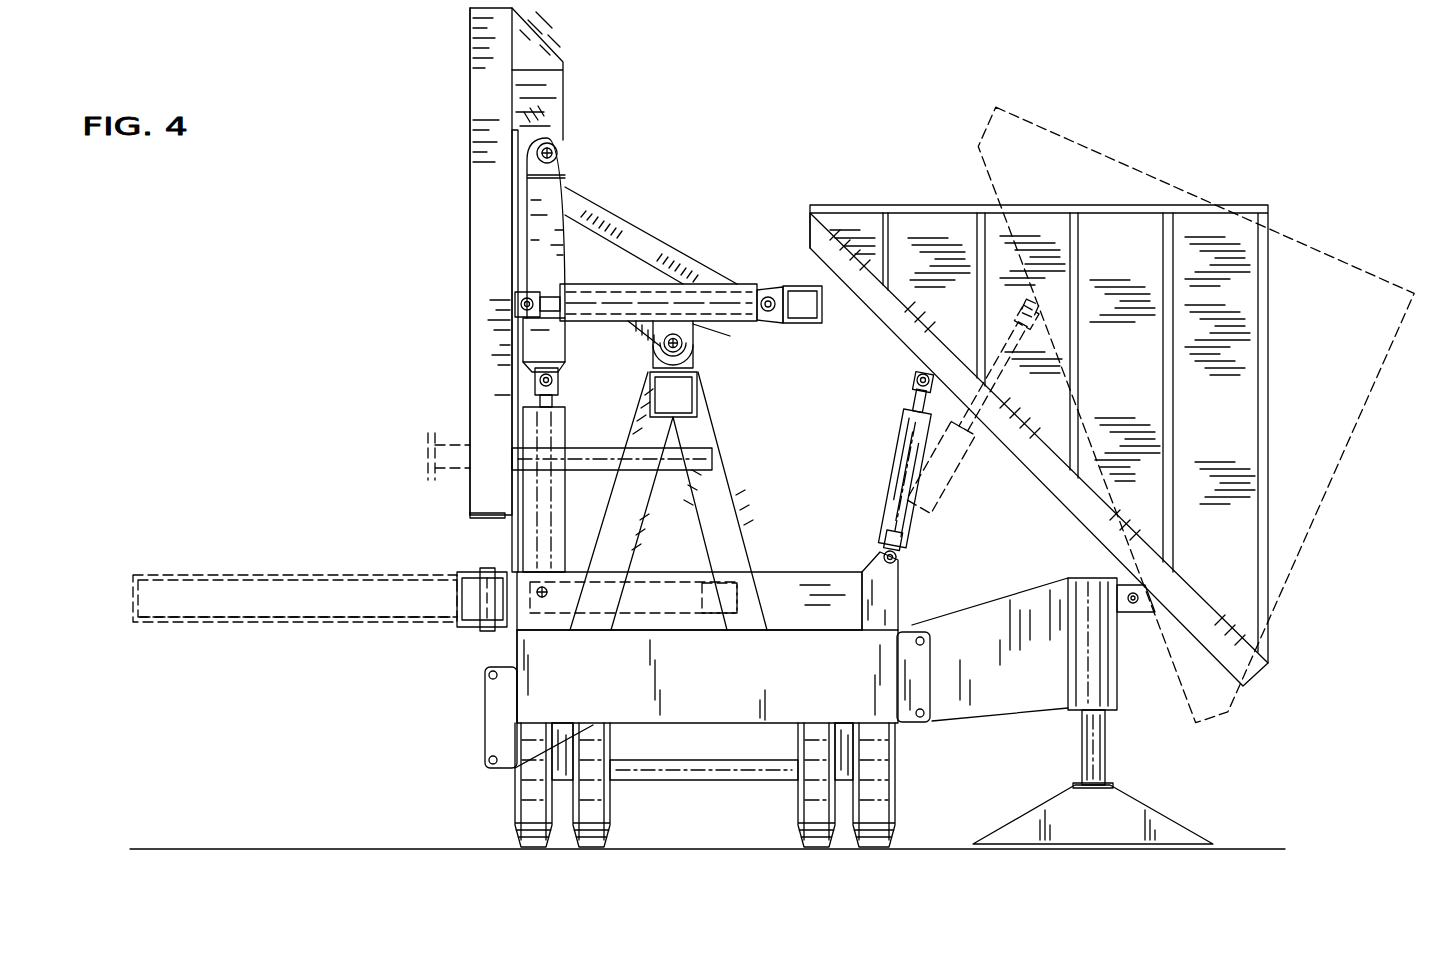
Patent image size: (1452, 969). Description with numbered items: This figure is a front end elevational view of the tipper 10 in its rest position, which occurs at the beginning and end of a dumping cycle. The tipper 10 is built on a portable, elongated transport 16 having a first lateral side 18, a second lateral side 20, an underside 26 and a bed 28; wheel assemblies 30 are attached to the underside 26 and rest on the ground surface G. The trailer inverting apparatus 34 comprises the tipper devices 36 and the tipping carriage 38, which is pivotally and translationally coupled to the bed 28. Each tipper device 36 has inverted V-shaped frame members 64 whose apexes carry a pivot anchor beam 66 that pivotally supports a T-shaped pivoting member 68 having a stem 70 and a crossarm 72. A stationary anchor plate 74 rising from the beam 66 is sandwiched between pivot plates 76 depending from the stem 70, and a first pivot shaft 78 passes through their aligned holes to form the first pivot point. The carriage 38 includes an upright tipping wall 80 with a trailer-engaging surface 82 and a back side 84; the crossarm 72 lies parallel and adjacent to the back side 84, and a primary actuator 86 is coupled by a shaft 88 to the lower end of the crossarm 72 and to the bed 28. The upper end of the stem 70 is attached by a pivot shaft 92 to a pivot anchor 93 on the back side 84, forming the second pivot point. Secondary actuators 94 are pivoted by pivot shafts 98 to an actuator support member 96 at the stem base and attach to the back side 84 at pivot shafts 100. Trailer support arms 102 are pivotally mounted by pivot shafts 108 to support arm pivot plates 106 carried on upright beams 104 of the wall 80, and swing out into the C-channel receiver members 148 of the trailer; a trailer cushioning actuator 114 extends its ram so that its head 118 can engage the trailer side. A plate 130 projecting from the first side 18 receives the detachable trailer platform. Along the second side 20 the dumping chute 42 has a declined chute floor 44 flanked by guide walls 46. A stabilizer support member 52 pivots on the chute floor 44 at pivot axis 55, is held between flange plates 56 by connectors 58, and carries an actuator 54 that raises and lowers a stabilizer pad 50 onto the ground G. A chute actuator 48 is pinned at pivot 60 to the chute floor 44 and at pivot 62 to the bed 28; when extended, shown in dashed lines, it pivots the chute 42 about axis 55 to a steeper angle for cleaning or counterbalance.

The tipper 10 is at (206, 742).
The transport 16 is at (512, 656).
The first lateral side 18 is at (508, 655).
The second lateral side 20 is at (900, 612).
The underside 26 is at (713, 724).
The bed 28 is at (796, 570).
The wheel assemblies 30 is at (716, 783).
The trailer inverting apparatus 34 is at (740, 104).
The tipper devices 36 is at (778, 418).
The tipping carriage 38 is at (462, 251).
The dumping chute 42 is at (1172, 170).
The chute floor 44 is at (1062, 487).
The guide walls 46 is at (1222, 393).
The chute actuators 48 is at (927, 453).
The stabilizer pads 50 is at (1155, 810).
The stabilizer support member 52 is at (993, 720).
The actuator 54 is at (1120, 690).
The pivot axis 55 is at (1133, 605).
The flange plates 56 is at (918, 726).
The connectors 58 is at (937, 643).
The pivot 60 is at (915, 378).
The pivot 62 is at (883, 556).
The inverted V-shaped frame members 64 is at (745, 418).
The pivot anchor beam 66 is at (700, 398).
The T-shaped pivoting member 68 is at (683, 284).
The stem 70 is at (773, 290).
The crossarm 72 is at (626, 278).
The anchor plate 74 is at (698, 363).
The pivot plates 76 is at (696, 341).
The first pivot shaft 78 is at (664, 350).
The tipping wall 80 is at (493, 173).
The trailer-engaging surface 82 is at (471, 83).
The back side 84 is at (518, 72).
The primary actuator 86 is at (530, 427).
The shaft 88 is at (534, 379).
The pivot shaft 92 is at (557, 150).
The pivot anchor 93 is at (530, 117).
The secondary actuators 94 is at (681, 298).
The actuator support member 96 is at (800, 289).
The pivot shafts 98 is at (775, 306).
The pivot shafts 100 is at (514, 304).
The trailer support arms 102 is at (185, 575).
The upright beams 104 is at (510, 542).
The support arm pivot plates 106 is at (470, 572).
The pivot shafts 108 is at (485, 627).
The trailer cushioning actuators 114 is at (575, 462).
The head 118 is at (428, 458).
The plate 130 is at (487, 745).
The C-channel receiver members 148 is at (183, 625).
The ground surface G is at (920, 849).